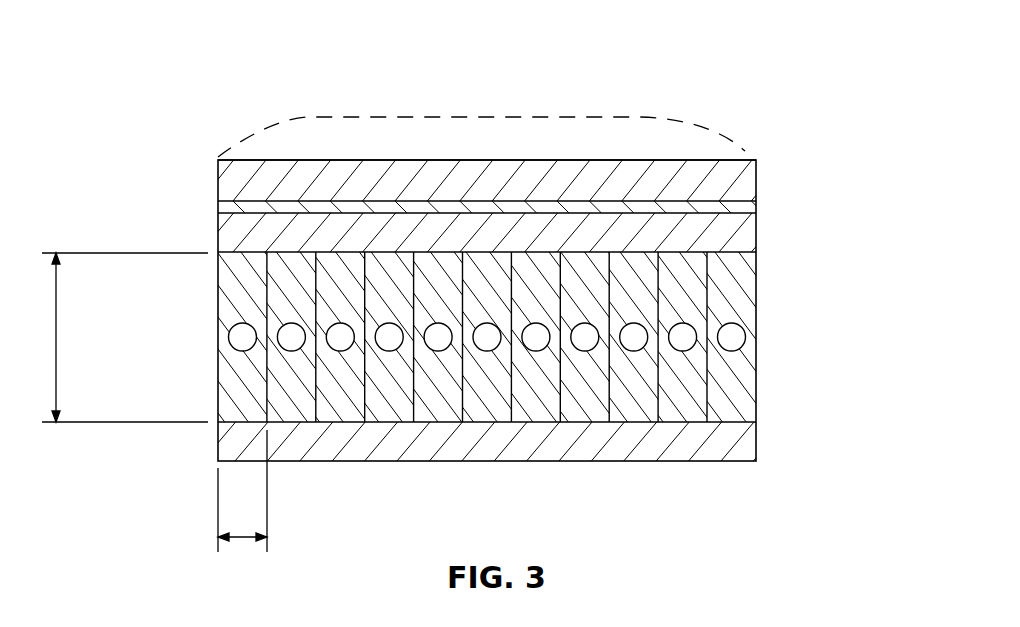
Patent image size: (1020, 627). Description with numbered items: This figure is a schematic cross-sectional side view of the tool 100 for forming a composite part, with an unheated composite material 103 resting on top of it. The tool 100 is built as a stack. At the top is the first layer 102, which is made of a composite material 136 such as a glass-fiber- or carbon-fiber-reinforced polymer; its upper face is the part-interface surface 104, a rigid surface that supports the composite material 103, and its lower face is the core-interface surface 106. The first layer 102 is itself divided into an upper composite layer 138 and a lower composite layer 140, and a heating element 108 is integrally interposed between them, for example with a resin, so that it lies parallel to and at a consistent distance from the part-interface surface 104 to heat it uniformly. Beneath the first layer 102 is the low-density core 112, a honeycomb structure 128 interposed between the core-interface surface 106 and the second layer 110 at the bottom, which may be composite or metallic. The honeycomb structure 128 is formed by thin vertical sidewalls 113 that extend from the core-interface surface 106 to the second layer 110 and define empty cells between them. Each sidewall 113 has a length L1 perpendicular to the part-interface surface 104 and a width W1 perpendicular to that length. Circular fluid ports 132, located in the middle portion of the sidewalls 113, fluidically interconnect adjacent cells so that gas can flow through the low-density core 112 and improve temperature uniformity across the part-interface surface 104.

The tool 100 is at (627, 69).
The first layer 102 is at (499, 146).
The unheated composite material 103 is at (481, 103).
The part-interface surface 104 is at (455, 158).
The core-interface surface 106 is at (495, 255).
The heating element 108 is at (740, 207).
The second layer 110 is at (745, 441).
The low-density core 112 is at (497, 377).
The sidewalls 113 is at (730, 388).
The honeycomb structure 128 is at (735, 365).
The fluid ports 132 is at (287, 340).
The composite material 136 is at (713, 182).
The upper composite layer 138 is at (230, 172).
The lower composite layer 140 is at (232, 228).
The length L1 is at (58, 330).
The width W1 is at (242, 540).